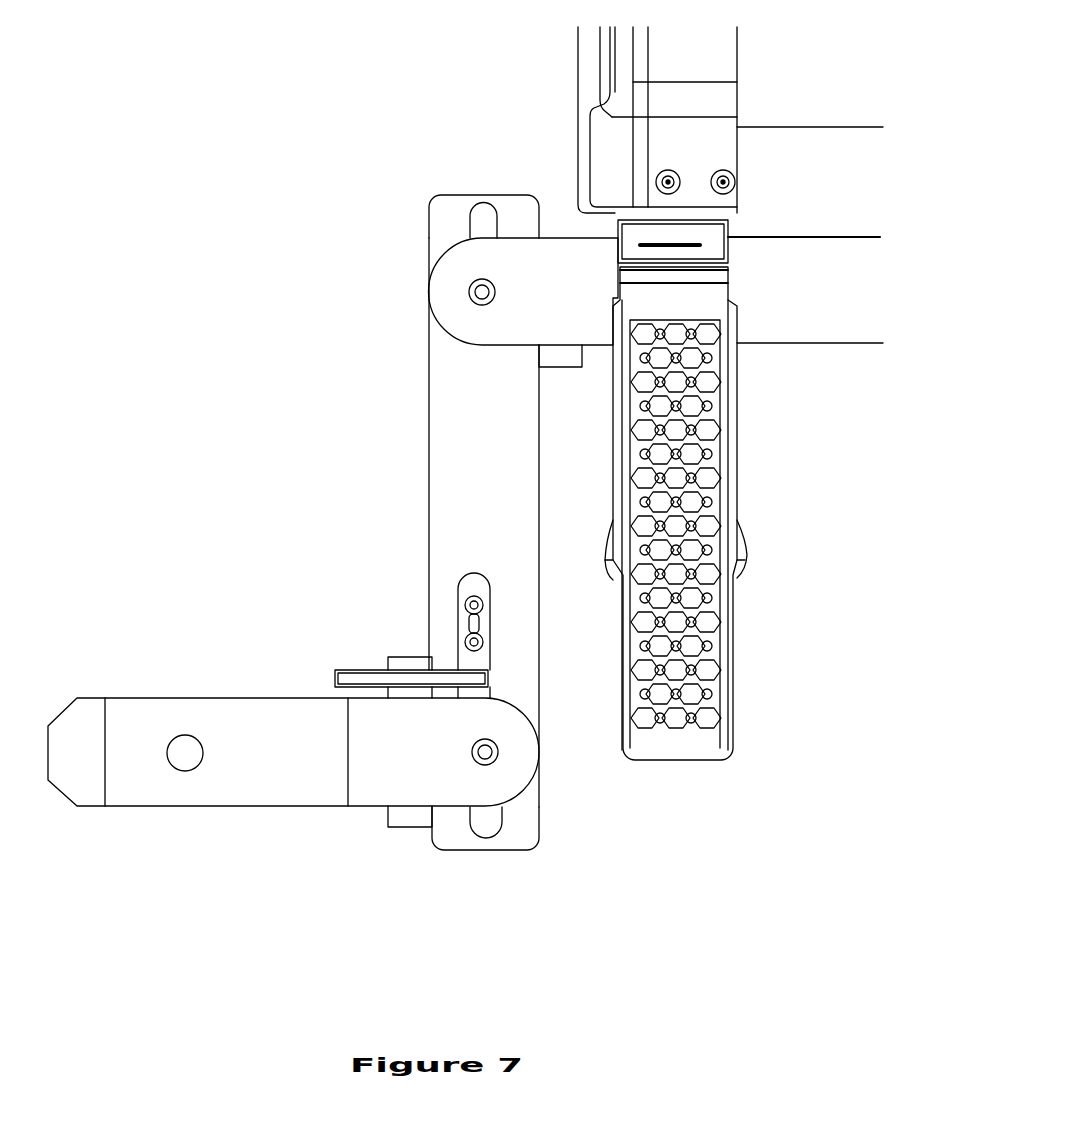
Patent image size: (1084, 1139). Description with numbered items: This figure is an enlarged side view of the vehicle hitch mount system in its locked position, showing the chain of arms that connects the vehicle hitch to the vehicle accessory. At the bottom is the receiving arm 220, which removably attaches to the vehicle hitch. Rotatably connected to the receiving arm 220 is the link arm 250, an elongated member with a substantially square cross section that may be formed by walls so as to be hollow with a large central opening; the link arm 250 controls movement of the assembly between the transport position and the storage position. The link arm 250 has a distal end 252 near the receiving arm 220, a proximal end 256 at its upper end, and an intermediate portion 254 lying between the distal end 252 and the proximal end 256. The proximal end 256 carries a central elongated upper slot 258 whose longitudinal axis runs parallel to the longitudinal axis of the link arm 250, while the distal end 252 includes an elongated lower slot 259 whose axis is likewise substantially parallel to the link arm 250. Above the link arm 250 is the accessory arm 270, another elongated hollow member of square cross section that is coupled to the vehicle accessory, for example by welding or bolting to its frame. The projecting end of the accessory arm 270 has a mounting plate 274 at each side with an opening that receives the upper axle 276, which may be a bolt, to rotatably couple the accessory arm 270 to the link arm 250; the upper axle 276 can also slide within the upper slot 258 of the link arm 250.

The receiving arm 220 is at (215, 643).
The link arm 250 is at (323, 423).
The distal end 252 is at (583, 813).
The intermediate portion 254 is at (407, 483).
The proximal end 256 is at (405, 263).
The upper slot 258 is at (473, 208).
The lower slot 259 is at (497, 836).
The accessory arm 270 is at (570, 202).
The mounting plate 274 is at (540, 307).
The upper axle 276 is at (470, 300).